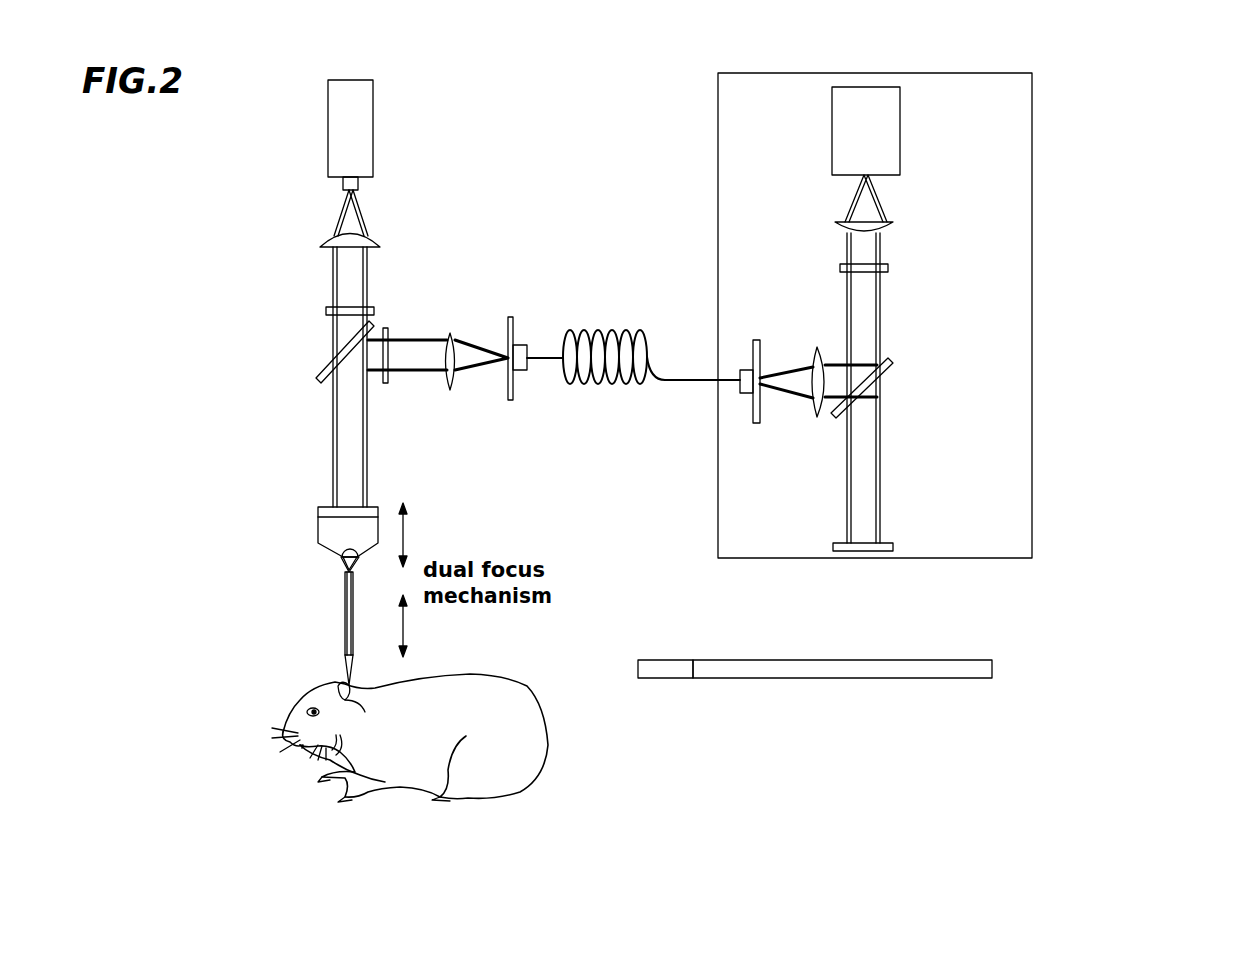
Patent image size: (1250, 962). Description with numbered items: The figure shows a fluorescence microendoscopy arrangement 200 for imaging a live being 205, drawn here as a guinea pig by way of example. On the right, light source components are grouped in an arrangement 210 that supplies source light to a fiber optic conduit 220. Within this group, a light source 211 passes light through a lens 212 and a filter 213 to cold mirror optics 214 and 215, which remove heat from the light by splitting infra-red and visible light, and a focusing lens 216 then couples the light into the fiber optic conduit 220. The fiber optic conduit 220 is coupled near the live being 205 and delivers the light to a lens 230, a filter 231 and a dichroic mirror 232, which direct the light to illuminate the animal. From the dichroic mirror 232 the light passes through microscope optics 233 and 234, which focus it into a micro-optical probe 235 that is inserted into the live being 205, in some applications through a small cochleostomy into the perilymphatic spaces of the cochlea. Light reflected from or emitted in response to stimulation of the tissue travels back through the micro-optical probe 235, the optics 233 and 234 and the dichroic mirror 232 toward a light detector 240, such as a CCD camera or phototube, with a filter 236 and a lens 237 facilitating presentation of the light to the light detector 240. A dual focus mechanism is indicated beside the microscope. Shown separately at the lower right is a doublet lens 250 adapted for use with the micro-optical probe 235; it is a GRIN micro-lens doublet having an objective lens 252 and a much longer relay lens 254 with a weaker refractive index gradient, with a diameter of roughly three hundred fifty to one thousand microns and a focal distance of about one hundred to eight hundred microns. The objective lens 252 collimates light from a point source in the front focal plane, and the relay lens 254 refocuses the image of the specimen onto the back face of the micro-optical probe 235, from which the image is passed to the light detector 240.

The fluorescence microendoscopy arrangement 200 is at (1165, 118).
The live being 205 is at (500, 682).
The light source arrangement 210 is at (932, 73).
The light source 211 is at (900, 148).
The lens 212 is at (893, 222).
The filter 213 is at (888, 266).
The cold mirror 214 is at (890, 361).
The cold mirror 215 is at (890, 543).
The focusing lens 216 is at (812, 414).
The fiber optic conduit 220 is at (604, 331).
The lens 230 is at (450, 333).
The filter 231 is at (388, 328).
The dichroic mirror 232 is at (324, 372).
The microscope optics 233 is at (378, 507).
The microscope optics 234 is at (340, 560).
The micro-optical probe 235 is at (345, 622).
The filter 236 is at (375, 306).
The lens 237 is at (375, 237).
The light detector 240 is at (366, 80).
The doublet lens 250 is at (903, 630).
The objective lens 252 is at (667, 660).
The relay lens 254 is at (925, 660).